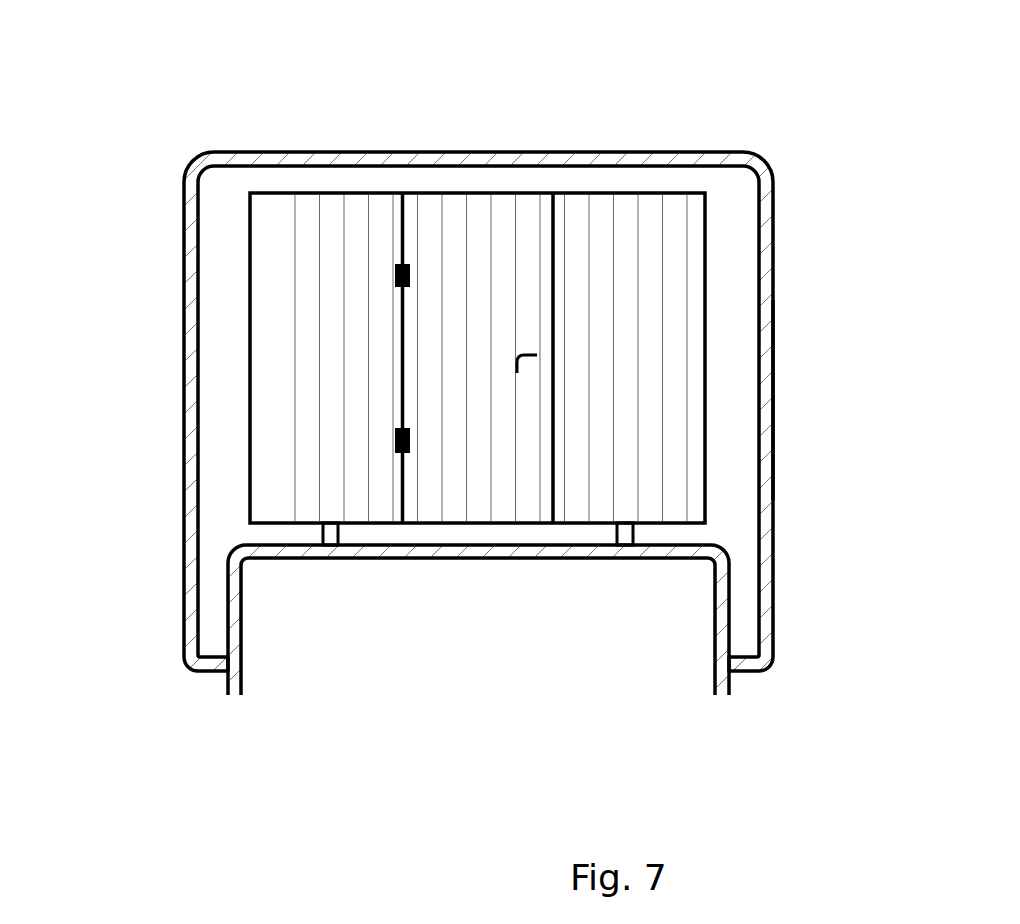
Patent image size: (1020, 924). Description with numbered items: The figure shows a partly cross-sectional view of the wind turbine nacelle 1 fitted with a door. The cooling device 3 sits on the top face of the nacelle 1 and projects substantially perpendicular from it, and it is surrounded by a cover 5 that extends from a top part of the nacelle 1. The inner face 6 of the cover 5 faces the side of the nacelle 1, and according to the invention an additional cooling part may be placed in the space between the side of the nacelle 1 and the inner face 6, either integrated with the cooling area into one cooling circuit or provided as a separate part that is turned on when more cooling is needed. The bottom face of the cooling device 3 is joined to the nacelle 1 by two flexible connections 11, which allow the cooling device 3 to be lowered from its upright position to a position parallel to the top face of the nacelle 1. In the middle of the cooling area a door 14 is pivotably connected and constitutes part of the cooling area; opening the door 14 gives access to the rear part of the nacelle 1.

The wind turbine nacelle 1 is at (723, 608).
The cooling device 3 is at (677, 228).
The cover 5 is at (763, 238).
The inner face of the cover 6 is at (757, 412).
The flexible connections 11 is at (330, 538).
The door 14 is at (497, 228).